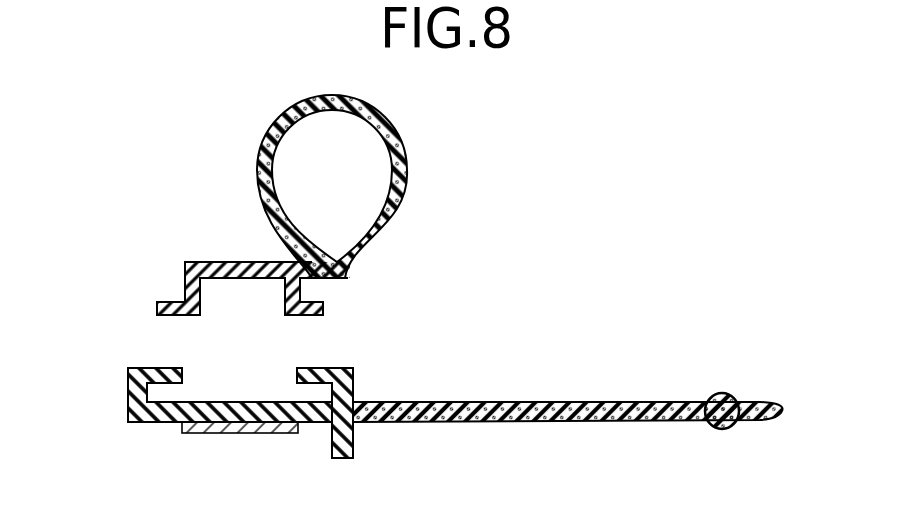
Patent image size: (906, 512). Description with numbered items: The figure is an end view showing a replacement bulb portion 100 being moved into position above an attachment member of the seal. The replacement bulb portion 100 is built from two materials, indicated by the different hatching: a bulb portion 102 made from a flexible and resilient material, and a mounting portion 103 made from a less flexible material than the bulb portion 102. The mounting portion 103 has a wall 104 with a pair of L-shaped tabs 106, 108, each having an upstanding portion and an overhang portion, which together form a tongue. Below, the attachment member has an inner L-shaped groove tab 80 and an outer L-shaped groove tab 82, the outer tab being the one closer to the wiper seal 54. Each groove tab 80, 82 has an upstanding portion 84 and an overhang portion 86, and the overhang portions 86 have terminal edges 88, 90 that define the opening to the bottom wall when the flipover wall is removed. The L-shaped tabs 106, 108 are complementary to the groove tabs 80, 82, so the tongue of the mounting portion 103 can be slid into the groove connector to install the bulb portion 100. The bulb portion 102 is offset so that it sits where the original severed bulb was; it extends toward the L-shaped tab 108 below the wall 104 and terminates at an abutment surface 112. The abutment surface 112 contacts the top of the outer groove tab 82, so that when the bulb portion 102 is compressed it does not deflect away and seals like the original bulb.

The wiper seal 54 is at (577, 402).
The inner L-shaped groove tab 80 is at (230, 391).
The outer L-shaped groove tab 82 is at (358, 371).
The upstanding portion 84 is at (128, 390).
The overhang portion 86 is at (153, 369).
The terminal edge 88 is at (182, 373).
The terminal edge 90 is at (292, 378).
The bulb portion 100 is at (308, 220).
The bulb portion 102 is at (270, 129).
The mounting portion 103 is at (190, 245).
The wall 104 is at (225, 263).
The L-shaped tab 106 is at (173, 291).
The L-shaped tab 108 is at (269, 296).
The abutment surface 112 is at (333, 279).